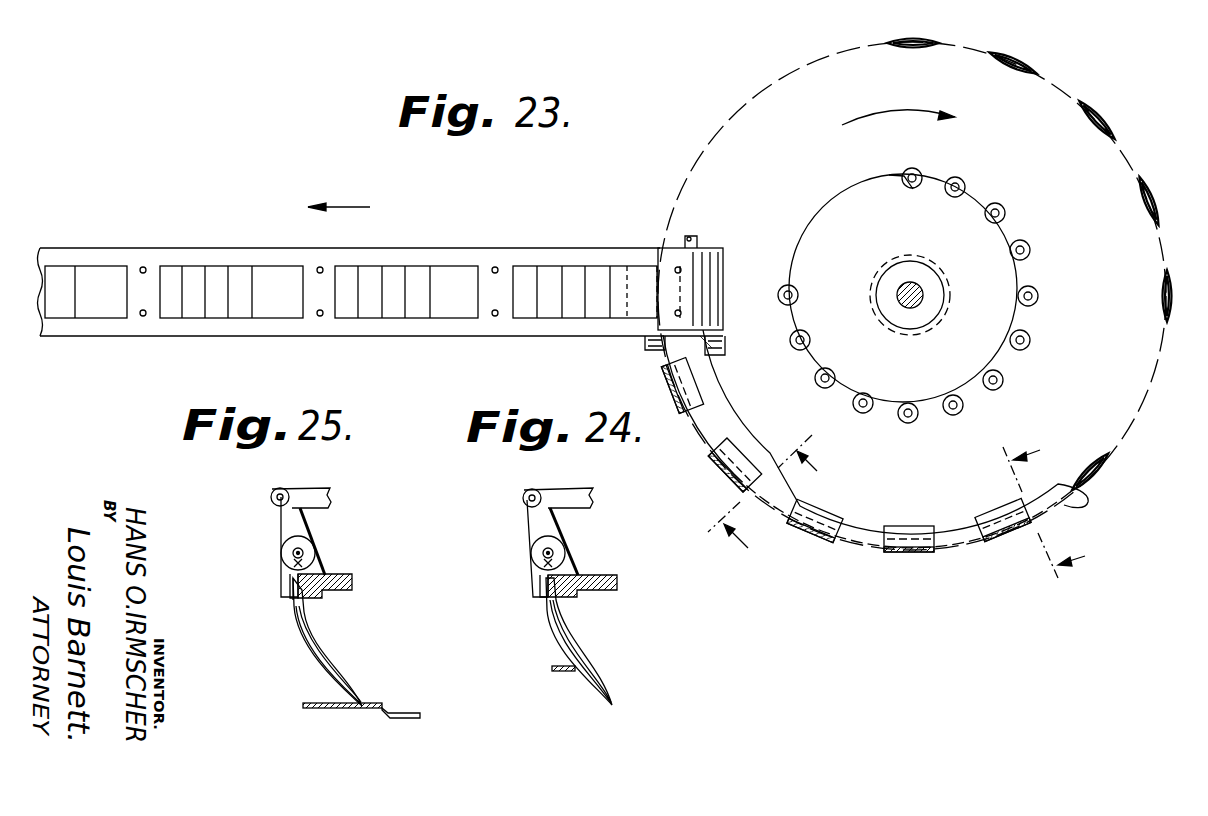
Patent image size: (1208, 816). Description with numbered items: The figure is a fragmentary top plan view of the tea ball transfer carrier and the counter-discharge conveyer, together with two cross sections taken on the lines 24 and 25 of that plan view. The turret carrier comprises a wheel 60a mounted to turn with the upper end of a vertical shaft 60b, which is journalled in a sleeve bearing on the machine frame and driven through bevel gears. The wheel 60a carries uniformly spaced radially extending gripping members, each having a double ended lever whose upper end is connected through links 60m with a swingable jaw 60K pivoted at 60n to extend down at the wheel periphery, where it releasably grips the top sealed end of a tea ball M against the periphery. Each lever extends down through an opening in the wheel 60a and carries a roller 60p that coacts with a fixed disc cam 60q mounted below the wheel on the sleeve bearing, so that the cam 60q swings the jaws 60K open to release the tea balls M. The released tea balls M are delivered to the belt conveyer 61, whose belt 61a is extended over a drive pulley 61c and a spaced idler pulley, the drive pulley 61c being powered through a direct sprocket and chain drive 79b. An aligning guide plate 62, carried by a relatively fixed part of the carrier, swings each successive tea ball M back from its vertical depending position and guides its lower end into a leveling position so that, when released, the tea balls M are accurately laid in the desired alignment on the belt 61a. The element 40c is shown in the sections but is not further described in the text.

In FIG. 23, the belt conveyer 61 is at (473, 240).
In FIG. 23, the belt 61a is at (205, 262).
In FIG. 23, the drive pulley 61c is at (706, 249).
In FIG. 23, the fixed disc cam 60q is at (982, 308).
In FIG. 23, the vertical shaft 60b is at (922, 290).
In FIG. 23, the roller 60p is at (778, 294).
In FIG. 23, the aligning guide plate 62 is at (724, 414).
In FIG. 25, the aligning guide plate 62 is at (416, 709).
In FIG. 24, the aligning guide plate 62 is at (563, 672).
In FIG. 23, the direct sprocket and chain drive 79b is at (714, 348).
In FIG. 23, the tea balls M is at (345, 318).
In FIG. 25, the tea balls M is at (336, 656).
In FIG. 24, the tea balls M is at (581, 649).
In FIG. 23, the section line 24— 24 is at (1057, 508).
In FIG. 23, the section line 25— 25 is at (776, 502).
In FIG. 25, the links 60m is at (281, 522).
In FIG. 24, the links 60m is at (537, 523).
In FIG. 25, the jaw pivot 60n is at (306, 554).
In FIG. 24, the jaw pivot 60n is at (556, 556).
In FIG. 25, the wheel 60a is at (353, 583).
In FIG. 24, the wheel 60a is at (618, 584).
In FIG. 25, the swingable jaw 60K is at (290, 587).
In FIG. 24, the swingable jaw 60K is at (541, 598).
In FIG. 25, the strip guide 40c is at (294, 601).